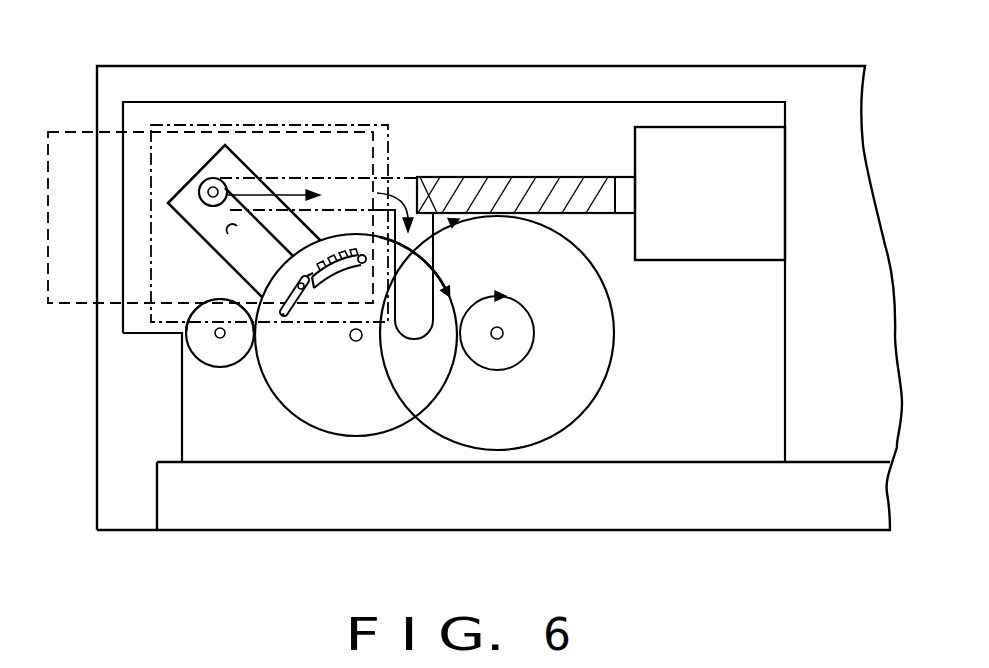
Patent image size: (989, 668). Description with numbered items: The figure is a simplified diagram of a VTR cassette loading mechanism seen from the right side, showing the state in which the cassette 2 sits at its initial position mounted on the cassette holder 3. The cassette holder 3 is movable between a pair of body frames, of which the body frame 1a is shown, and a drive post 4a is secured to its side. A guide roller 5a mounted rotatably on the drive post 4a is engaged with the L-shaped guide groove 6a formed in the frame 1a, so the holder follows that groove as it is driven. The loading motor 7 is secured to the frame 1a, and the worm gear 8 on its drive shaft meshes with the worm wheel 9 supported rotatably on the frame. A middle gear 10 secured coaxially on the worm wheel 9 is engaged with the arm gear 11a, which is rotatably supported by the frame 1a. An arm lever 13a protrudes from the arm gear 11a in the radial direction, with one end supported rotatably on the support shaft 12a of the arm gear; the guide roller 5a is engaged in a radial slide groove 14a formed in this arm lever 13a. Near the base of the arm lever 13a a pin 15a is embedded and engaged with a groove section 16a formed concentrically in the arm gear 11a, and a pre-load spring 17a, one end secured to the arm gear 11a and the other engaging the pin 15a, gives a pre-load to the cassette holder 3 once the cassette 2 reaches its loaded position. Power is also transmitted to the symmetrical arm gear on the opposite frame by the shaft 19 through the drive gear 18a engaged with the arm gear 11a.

The body frame 1a is at (521, 102).
The cassette 2 is at (70, 132).
The cassette holder 3 is at (341, 125).
The drive post 4a is at (224, 180).
The guide roller 5a is at (212, 180).
The L-shaped guide groove 6a is at (313, 178).
The loading motor (FL motor) 7 is at (688, 127).
The worm gear 8 is at (592, 177).
The worm wheel 9 is at (567, 407).
The middle gear 10 is at (505, 366).
The arm gear 11a is at (348, 420).
The support shaft 12a is at (356, 342).
The arm lever 13a is at (192, 206).
The slide groove 14a is at (232, 231).
The pin 15a is at (305, 295).
The groove section 16a is at (290, 312).
The pre-load spring 17a is at (343, 253).
The drive gear 18a is at (202, 347).
The shaft 19 is at (220, 339).